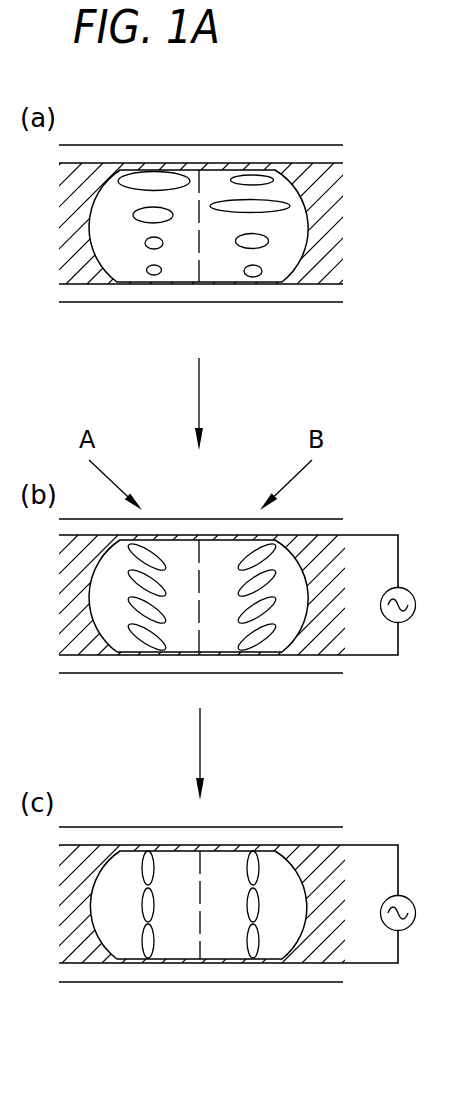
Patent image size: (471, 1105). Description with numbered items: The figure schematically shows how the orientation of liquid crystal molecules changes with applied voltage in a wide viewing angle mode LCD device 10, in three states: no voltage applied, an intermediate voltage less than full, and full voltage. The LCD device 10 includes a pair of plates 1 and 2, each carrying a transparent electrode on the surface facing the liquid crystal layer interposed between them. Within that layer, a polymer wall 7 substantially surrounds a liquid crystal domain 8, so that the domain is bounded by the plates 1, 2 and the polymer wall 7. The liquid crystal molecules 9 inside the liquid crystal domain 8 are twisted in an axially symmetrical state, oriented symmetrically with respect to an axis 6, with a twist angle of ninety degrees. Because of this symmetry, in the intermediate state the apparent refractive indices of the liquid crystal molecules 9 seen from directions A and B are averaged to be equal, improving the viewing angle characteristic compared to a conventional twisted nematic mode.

The wide viewing angle mode LCD device 10 is at (288, 96).
The plate 1 is at (325, 154).
The plate 2 is at (317, 292).
The axis 6 is at (201, 195).
The polymer wall 7 is at (316, 207).
The liquid crystal domain 8 is at (275, 263).
The liquid crystal molecules 9 is at (248, 207).